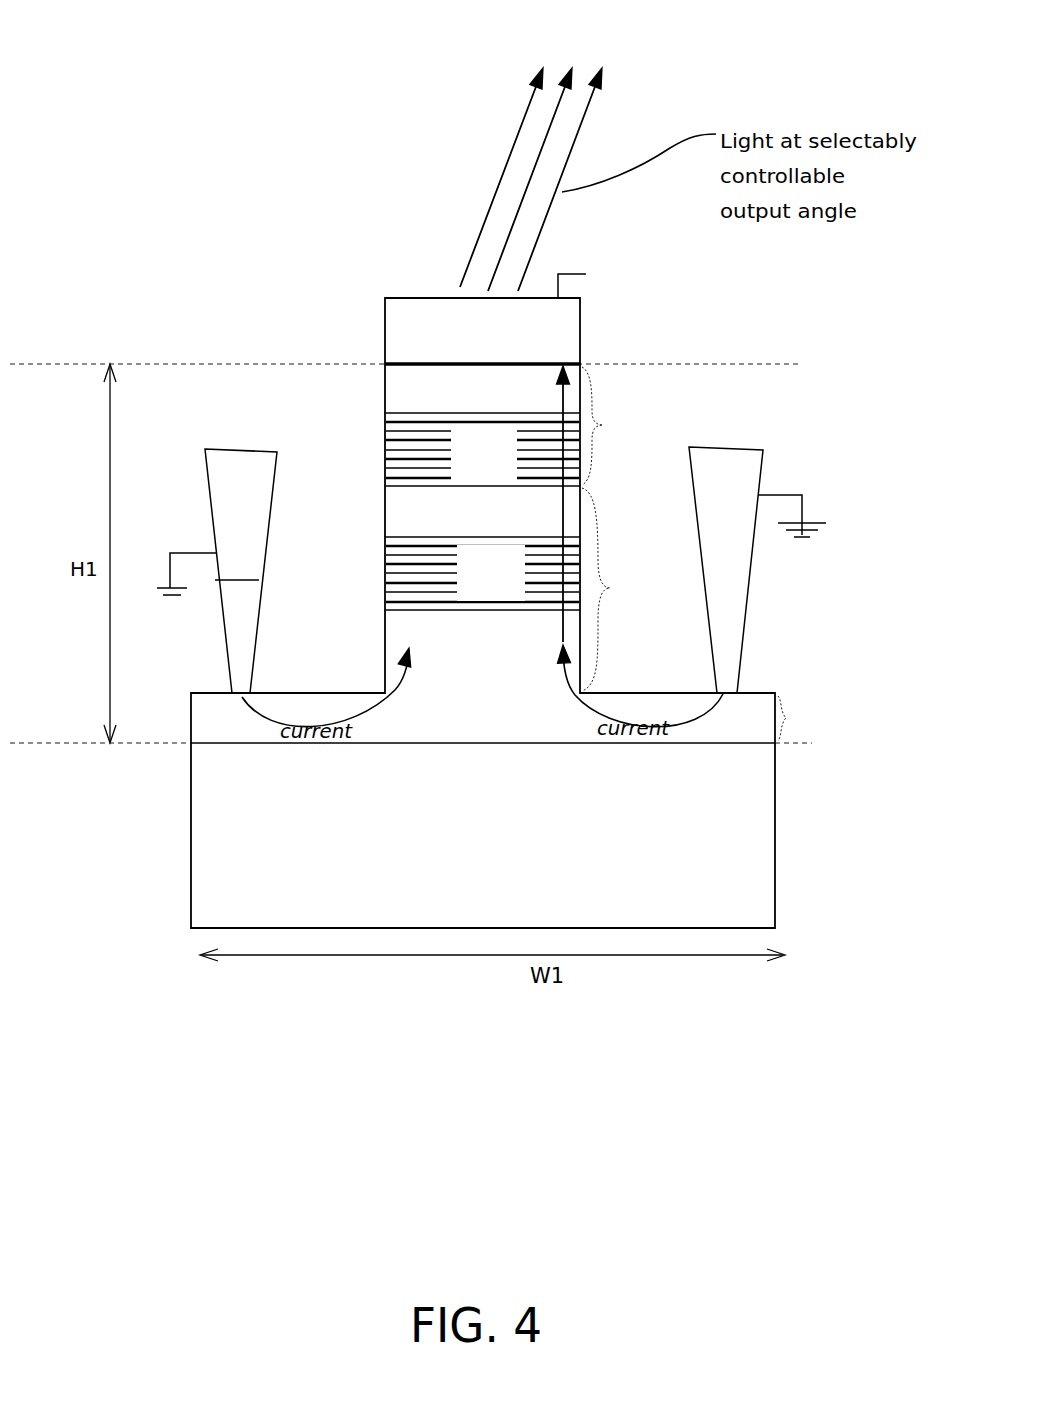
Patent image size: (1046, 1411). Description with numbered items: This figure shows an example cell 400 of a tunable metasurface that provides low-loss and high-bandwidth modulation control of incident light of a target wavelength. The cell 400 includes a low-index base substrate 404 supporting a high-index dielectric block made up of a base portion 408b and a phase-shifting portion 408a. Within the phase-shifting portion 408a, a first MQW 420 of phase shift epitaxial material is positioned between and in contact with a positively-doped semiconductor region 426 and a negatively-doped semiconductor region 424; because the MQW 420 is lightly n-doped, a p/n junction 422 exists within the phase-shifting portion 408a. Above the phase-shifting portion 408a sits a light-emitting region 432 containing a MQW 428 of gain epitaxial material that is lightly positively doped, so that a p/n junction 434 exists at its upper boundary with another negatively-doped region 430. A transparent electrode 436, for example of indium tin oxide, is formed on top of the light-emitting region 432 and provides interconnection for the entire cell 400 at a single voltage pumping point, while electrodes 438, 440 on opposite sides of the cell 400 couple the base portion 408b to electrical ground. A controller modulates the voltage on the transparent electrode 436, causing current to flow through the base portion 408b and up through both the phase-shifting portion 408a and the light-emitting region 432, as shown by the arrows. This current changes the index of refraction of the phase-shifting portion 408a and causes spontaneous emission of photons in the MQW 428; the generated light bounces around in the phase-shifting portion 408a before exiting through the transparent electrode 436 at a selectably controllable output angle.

The cell 400 is at (150, 58).
The low-index base substrate 404 is at (556, 613).
The phase-shifting portion 408a is at (612, 588).
The base portion 408b is at (790, 718).
The first MQW 420 is at (482, 577).
The p/n junction 422 is at (392, 531).
The negatively-doped semiconductor region 424 is at (395, 647).
The positively-doped semiconductor region 426 is at (393, 505).
The MQW 428 is at (628, 373).
The negatively-doped region 430 is at (394, 407).
The light-emitting region 432 is at (481, 389).
The p/n junction 434 is at (407, 400).
The transparent electrode 436 is at (510, 314).
The electrode 438 is at (230, 497).
The electrode 440 is at (747, 472).